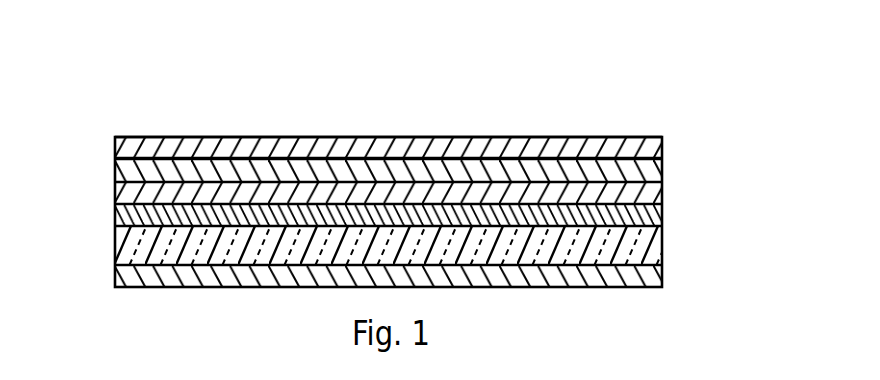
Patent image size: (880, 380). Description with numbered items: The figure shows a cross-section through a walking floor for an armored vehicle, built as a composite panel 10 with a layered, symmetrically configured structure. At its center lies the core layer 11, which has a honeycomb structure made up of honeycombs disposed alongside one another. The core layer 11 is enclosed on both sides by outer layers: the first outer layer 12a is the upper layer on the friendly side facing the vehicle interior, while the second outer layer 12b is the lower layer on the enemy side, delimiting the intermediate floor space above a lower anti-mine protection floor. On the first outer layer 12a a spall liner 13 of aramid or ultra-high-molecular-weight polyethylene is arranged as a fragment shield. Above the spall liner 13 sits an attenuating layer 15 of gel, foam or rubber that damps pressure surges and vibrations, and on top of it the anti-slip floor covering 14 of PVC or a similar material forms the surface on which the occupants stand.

The composite panel 10 is at (100, 96).
The floor covering 14 is at (664, 149).
The attenuating layer 15 is at (664, 167).
The spall liner 13 is at (664, 193).
The first outer layer 12a is at (664, 213).
The core layer 11 is at (664, 248).
The second outer layer 12b is at (664, 275).